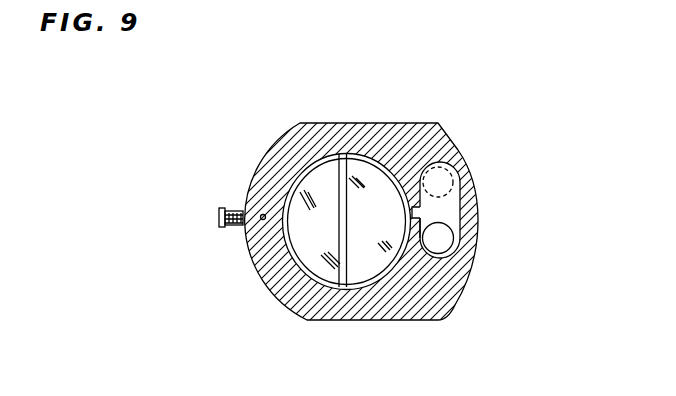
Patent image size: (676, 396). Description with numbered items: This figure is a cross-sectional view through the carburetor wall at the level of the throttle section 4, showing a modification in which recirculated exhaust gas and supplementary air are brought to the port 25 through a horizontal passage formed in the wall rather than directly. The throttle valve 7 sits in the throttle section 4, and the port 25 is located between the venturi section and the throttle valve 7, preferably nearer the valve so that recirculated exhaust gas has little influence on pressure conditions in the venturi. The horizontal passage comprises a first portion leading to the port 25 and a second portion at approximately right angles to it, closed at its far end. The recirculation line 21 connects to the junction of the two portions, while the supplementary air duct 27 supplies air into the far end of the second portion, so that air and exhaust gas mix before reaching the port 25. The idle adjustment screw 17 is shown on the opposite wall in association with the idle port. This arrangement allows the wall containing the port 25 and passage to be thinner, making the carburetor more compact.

The throttle section 4 is at (375, 188).
The throttle valve 7 is at (320, 273).
The idle adjustment screw 17 is at (222, 227).
The recirculation line 21 is at (443, 237).
The port 25 is at (403, 237).
The supplementary air duct 27 is at (445, 179).